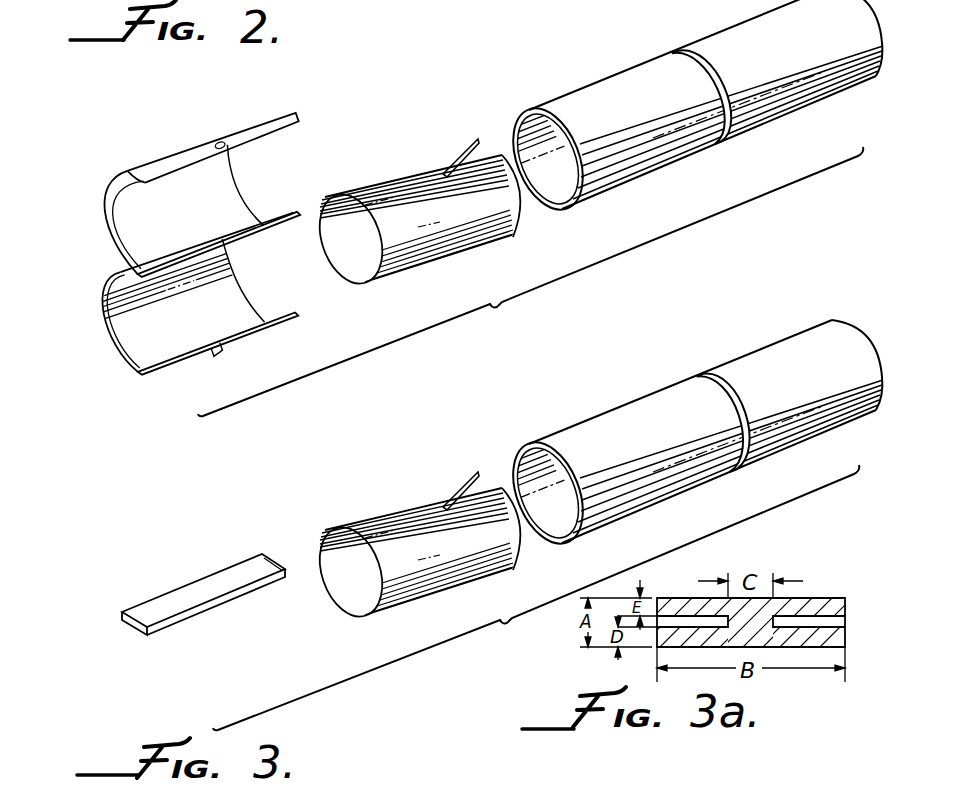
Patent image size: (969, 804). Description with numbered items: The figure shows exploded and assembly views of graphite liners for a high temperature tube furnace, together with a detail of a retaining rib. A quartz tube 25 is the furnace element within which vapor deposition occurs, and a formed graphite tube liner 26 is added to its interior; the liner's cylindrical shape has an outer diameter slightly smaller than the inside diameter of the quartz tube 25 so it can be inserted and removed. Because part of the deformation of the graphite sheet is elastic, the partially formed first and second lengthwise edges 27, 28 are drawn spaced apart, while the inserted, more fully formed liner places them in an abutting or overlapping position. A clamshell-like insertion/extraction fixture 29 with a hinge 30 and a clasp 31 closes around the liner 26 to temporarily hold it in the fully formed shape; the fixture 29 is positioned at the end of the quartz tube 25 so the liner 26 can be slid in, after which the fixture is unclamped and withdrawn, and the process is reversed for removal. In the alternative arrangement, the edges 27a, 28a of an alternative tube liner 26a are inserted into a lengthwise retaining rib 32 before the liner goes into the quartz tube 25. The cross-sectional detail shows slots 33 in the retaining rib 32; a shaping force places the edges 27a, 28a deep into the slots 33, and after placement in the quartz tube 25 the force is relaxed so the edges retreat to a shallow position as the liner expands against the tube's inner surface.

In FIG. 2, the quartz tube 25 is at (632, 70).
In FIG. 3, the quartz tube 25 is at (635, 405).
In FIG. 2, the graphite tube liner 26 is at (415, 205).
In FIG. 3, the alternative tube liner 26a is at (415, 532).
In FIG. 2, the first lengthwise edge 27 is at (387, 172).
In FIG. 3, the first lengthwise edge of alternative liner 27a is at (387, 505).
In FIG. 2, the second lengthwise edge 28 is at (444, 174).
In FIG. 3, the second lengthwise edge of alternative liner 28a is at (444, 507).
In FIG. 2, the insertion/extraction fixture 29 is at (209, 318).
In FIG. 2, the hinge 30 is at (118, 262).
In FIG. 2, the clasp 31 is at (225, 352).
In FIG. 3, the lengthwise retaining rib 32 is at (175, 593).
In FIG. 3A, the lengthwise retaining rib 32 is at (826, 598).
In FIG. 3A, the slots 33 is at (677, 618).